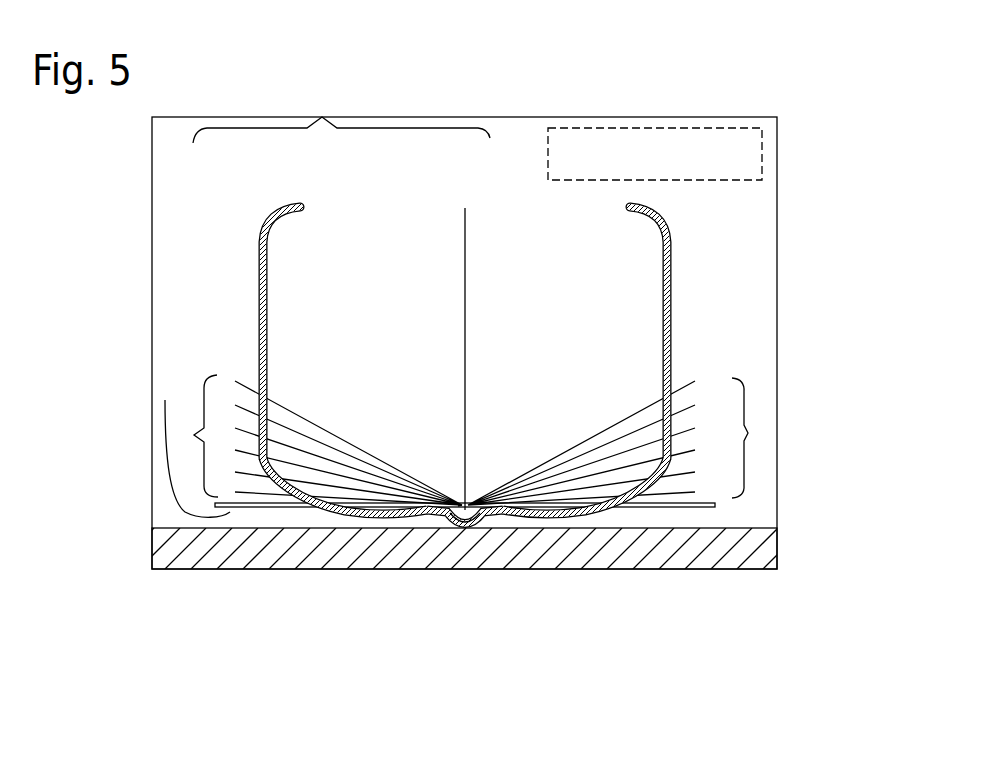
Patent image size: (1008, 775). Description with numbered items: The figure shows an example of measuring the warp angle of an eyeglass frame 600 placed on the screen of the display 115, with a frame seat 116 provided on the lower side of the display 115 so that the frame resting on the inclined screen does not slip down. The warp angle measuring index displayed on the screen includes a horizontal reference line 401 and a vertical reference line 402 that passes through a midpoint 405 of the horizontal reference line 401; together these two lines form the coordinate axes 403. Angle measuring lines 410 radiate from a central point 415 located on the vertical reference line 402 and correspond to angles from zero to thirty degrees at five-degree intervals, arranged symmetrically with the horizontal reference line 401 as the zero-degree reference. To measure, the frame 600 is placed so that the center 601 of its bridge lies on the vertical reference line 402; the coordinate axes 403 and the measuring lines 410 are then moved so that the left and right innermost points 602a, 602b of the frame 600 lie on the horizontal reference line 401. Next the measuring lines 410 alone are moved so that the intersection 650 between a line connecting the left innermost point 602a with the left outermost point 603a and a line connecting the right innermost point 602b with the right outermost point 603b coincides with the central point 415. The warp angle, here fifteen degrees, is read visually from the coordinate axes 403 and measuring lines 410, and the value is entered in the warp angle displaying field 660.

The display 115 is at (152, 277).
The frame seat 116 is at (762, 547).
The horizontal reference line 401 is at (165, 400).
The vertical reference line 402 is at (467, 236).
The coordinate axes 403 is at (322, 118).
The midpoint 405 is at (458, 506).
The angle measuring lines 410 is at (195, 435).
The central point 415 is at (475, 506).
The frame 600 is at (526, 444).
The center of the frame 601 is at (466, 508).
The left innermost point 602a is at (481, 512).
The right innermost point 602b is at (457, 513).
The left outermost point 603a is at (666, 460).
The right outermost point 603b is at (262, 460).
The intersection 650 is at (463, 527).
The warp angle displaying field 660 is at (598, 128).